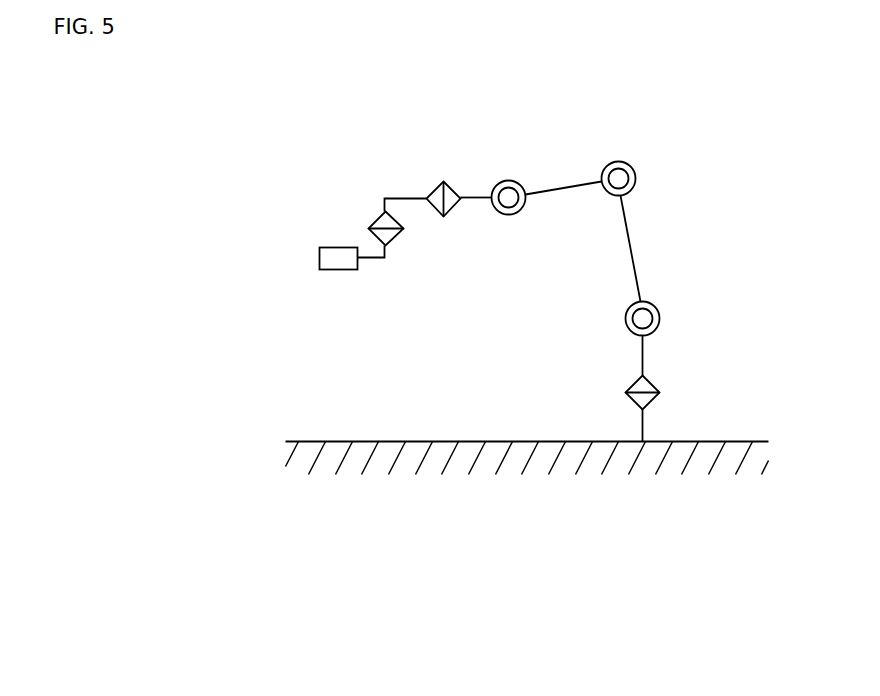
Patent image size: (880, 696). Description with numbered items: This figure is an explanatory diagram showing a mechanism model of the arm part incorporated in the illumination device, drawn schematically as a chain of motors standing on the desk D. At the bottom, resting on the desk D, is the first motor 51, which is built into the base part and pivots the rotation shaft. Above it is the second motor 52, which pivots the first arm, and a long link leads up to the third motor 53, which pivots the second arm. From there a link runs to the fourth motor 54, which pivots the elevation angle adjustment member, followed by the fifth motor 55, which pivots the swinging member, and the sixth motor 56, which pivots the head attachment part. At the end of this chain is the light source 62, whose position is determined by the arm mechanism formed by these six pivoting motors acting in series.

The light source 62 is at (318, 258).
The sixth motor 56 is at (377, 212).
The fifth motor 55 is at (440, 182).
The fourth motor 54 is at (506, 180).
The third motor 53 is at (624, 162).
The second motor 52 is at (660, 316).
The first motor 51 is at (656, 381).
The desk D is at (338, 441).